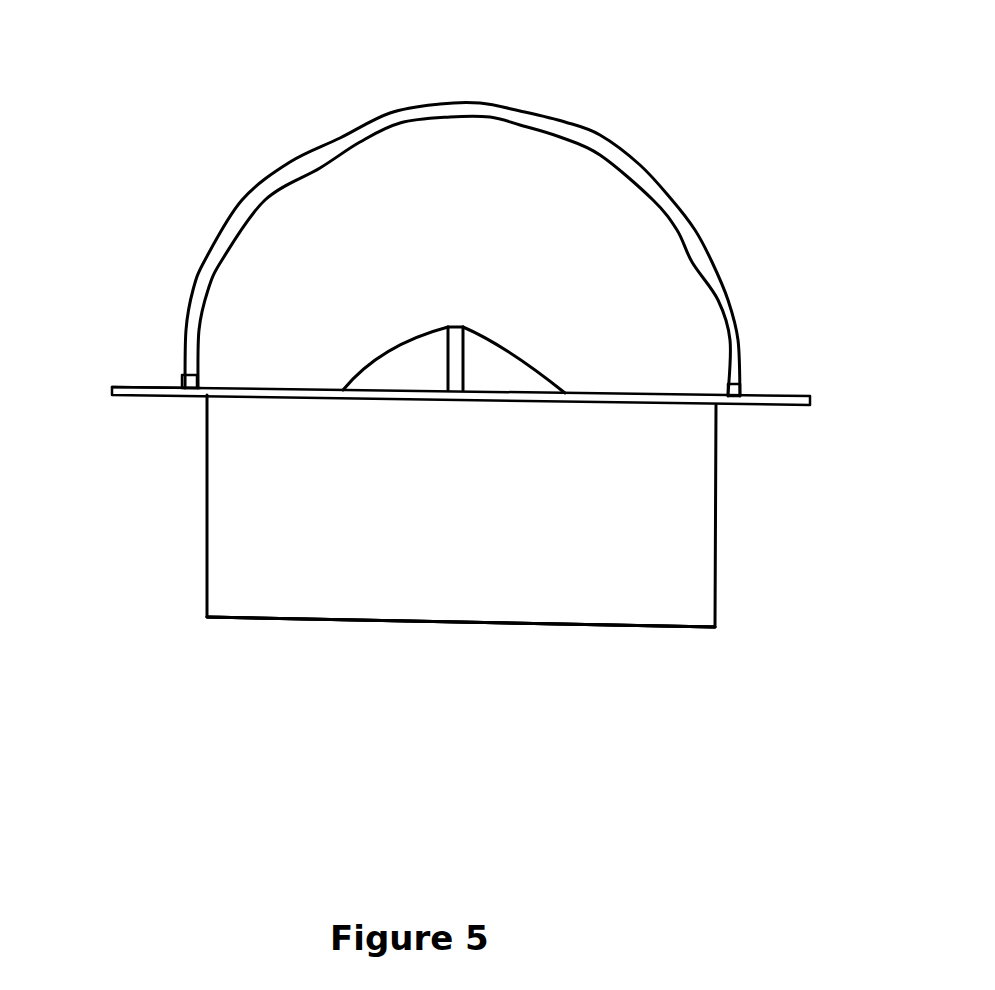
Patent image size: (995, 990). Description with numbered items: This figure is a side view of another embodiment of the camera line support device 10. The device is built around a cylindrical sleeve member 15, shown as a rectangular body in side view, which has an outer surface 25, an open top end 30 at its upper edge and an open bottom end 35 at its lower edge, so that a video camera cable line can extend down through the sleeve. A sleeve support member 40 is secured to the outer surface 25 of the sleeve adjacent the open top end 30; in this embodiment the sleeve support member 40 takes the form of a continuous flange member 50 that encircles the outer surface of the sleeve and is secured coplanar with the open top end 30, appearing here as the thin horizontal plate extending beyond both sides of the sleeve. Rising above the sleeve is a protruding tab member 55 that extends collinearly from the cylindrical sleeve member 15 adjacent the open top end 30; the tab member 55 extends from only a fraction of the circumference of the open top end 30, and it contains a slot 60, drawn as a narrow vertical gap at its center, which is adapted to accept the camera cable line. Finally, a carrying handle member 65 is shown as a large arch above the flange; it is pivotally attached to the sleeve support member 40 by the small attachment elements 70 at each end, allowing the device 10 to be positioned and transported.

The camera line support device 10 is at (722, 118).
The cylindrical sleeve member 15 is at (184, 561).
The outer surface 25 is at (660, 512).
The open top end 30 is at (445, 270).
The open bottom end 35 is at (468, 652).
The sleeve support member 40 is at (788, 383).
The continuous flange member 50 is at (130, 387).
The protruding tab member 55 is at (400, 362).
The slot 60 is at (460, 320).
The carrying handle member 65 is at (640, 17).
The clips 70 is at (180, 380).